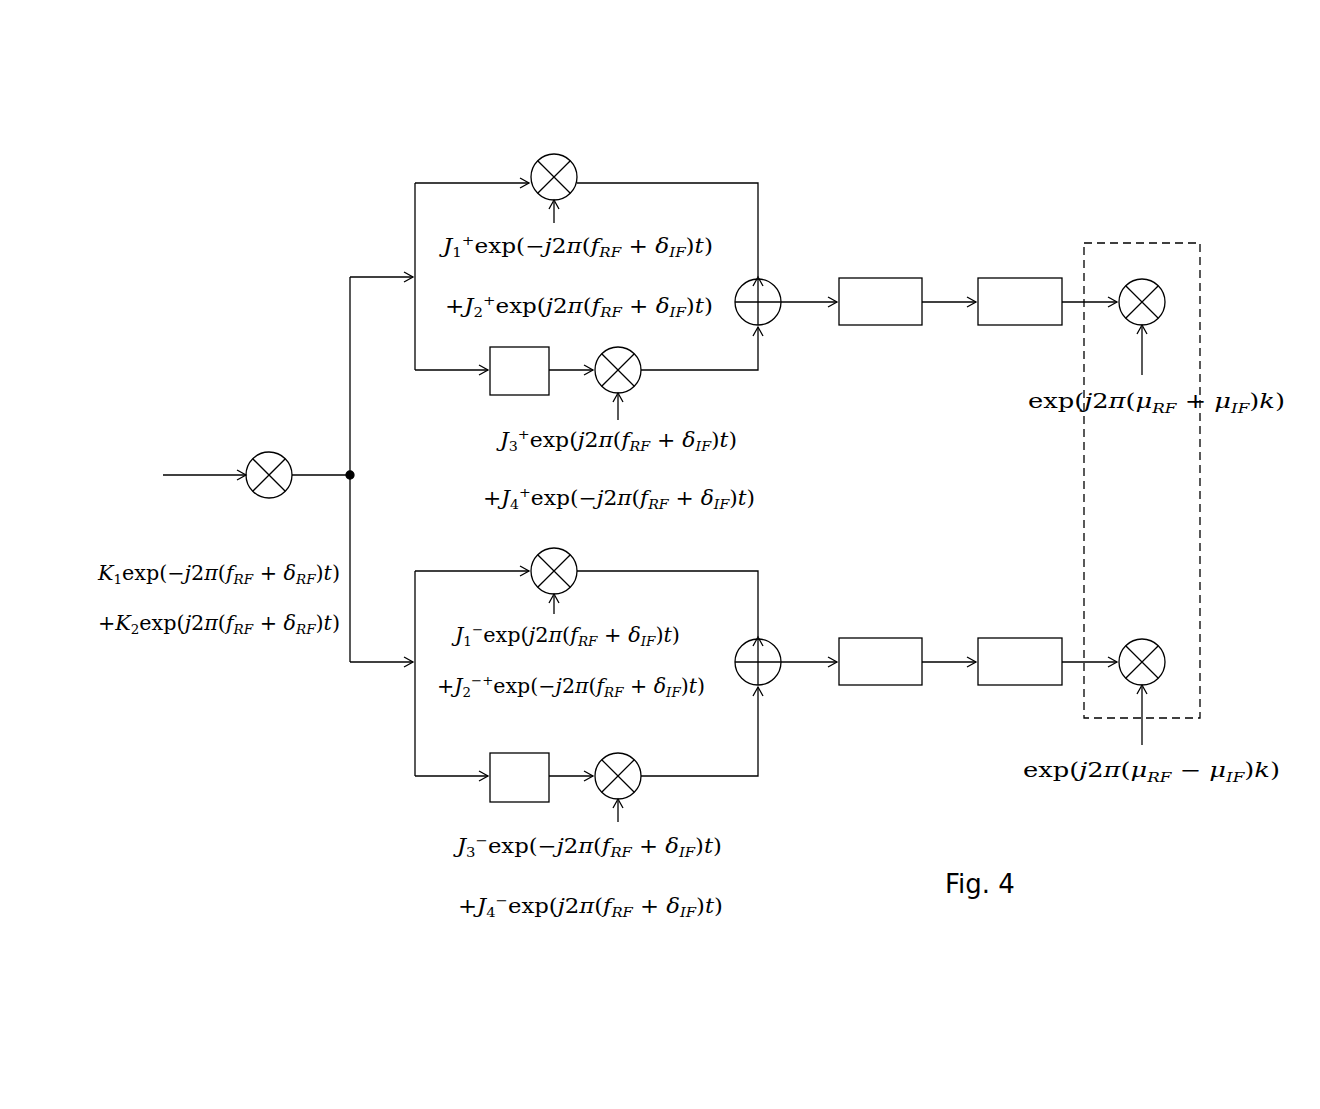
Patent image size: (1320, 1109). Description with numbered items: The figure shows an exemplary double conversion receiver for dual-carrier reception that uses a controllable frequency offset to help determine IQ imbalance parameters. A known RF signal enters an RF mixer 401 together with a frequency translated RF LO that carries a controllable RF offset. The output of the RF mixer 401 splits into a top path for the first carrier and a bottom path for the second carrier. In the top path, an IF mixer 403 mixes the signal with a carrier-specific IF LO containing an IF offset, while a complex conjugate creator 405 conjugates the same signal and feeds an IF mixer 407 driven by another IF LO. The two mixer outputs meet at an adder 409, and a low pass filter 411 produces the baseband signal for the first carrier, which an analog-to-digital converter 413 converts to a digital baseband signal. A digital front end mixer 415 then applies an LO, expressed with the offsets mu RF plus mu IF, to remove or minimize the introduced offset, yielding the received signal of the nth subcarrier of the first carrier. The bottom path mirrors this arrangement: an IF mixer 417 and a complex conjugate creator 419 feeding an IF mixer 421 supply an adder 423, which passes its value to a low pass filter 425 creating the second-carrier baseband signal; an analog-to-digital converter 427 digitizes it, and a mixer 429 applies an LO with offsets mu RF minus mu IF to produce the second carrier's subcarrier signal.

The RF mixer 401 is at (269, 452).
The IF mixer 403 is at (573, 163).
The complex conjugate creator 405 is at (488, 391).
The IF mixer 407 is at (641, 379).
The adder 409 is at (772, 288).
The low pass filter 411 is at (878, 325).
The analog-to-digital converter 413 is at (1018, 325).
The mixer 415 is at (1142, 279).
The IF mixer 417 is at (571, 556).
The complex conjugate creator 419 is at (488, 798).
The IF mixer 421 is at (641, 770).
The adder 423 is at (772, 648).
The low pass filter 425 is at (878, 685).
The analog-to-digital converter 427 is at (1018, 685).
The mixer 429 is at (1142, 639).